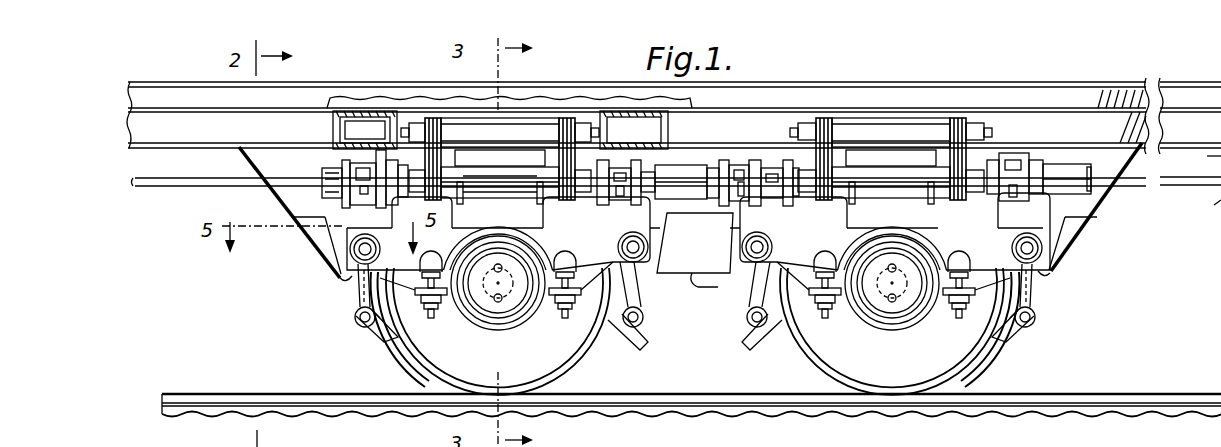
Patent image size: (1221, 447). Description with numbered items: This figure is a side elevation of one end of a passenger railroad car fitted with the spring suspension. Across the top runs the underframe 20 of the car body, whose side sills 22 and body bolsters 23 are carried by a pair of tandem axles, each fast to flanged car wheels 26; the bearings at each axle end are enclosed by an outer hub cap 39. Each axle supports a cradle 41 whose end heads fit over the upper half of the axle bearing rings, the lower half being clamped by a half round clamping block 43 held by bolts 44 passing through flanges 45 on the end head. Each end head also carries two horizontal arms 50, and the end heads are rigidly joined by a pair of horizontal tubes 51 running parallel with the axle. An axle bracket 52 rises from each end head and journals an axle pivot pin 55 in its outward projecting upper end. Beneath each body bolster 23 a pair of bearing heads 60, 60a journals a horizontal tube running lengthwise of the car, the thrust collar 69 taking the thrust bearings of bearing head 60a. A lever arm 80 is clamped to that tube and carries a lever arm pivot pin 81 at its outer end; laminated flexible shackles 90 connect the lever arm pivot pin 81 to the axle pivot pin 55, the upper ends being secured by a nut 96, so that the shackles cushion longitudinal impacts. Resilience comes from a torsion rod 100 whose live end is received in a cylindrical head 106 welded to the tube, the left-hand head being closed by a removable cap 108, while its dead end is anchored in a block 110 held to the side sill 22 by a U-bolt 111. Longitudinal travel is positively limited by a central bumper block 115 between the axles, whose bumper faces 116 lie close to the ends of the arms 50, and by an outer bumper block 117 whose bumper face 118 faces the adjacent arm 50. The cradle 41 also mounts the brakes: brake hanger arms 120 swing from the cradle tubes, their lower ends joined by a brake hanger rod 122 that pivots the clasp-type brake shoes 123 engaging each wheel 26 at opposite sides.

The underframe 20 is at (1176, 77).
The side sill 22 is at (146, 130).
The body bolster 23 is at (333, 126).
The flanged car wheel 26 is at (420, 374).
The outer hub cap 39 is at (880, 259).
The cradle 41 is at (584, 231).
The half round clamping block 43 is at (492, 344).
The bolt 44 is at (433, 320).
The flange 45 is at (574, 271).
The horizontal arm 50 is at (353, 285).
The horizontal tube 51 is at (1042, 248).
The axle bracket 52 is at (695, 142).
The axle pivot pin 55 is at (365, 131).
The bearing head 60 is at (618, 200).
The bearing head 60a is at (366, 176).
The thrust collar 69 is at (342, 181).
The lever arm 80 is at (497, 199).
The lever arm pivot pin 81 is at (500, 181).
The flexible shackle 90 is at (438, 114).
The nut 96 is at (426, 116).
The torsion rod 100 is at (138, 188).
The cylindrical head 106 is at (680, 166).
The removable cap 108 is at (735, 173).
The block 110 is at (1198, 158).
The U-bolt 111 is at (1205, 207).
The central bumper block 115 is at (695, 243).
The bumper face 116 is at (735, 281).
The bumper block 117 is at (320, 244).
The bumper face 118 is at (348, 282).
The brake hanger arm 120 is at (360, 314).
The brake hanger rod 122 is at (360, 329).
The brake shoe 123 is at (378, 336).